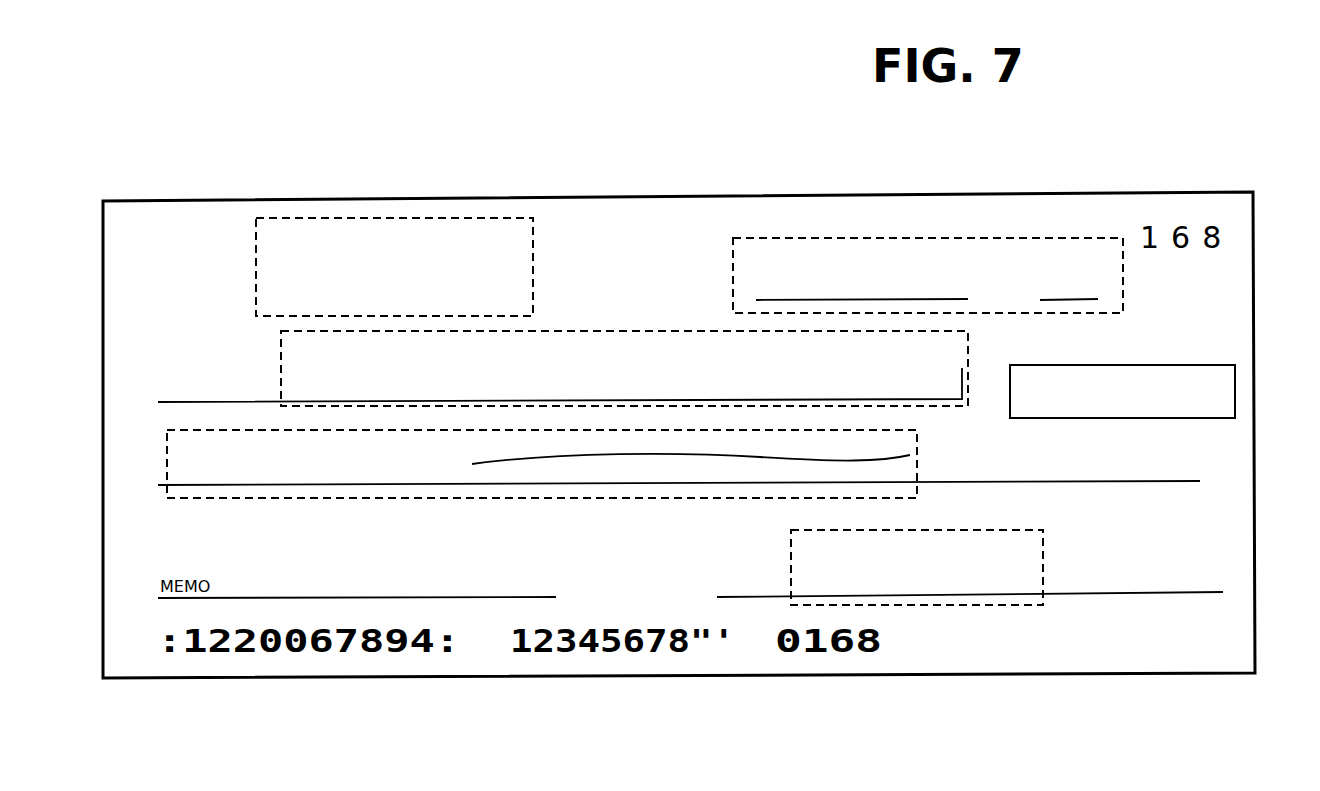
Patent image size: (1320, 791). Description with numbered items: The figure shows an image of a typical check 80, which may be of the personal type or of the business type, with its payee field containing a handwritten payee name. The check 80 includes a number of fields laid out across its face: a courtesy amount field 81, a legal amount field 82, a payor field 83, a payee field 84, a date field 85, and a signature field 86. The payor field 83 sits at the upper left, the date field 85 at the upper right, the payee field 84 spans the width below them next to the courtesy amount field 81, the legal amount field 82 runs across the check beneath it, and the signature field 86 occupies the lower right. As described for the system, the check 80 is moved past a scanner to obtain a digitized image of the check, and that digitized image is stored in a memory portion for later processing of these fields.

The check 80 is at (656, 195).
The courtesy amount field 81 is at (1235, 388).
The legal amount field 82 is at (165, 452).
The payor field 83 is at (296, 217).
The payee field 84 is at (280, 344).
The date field 85 is at (732, 269).
The signature field 86 is at (790, 541).